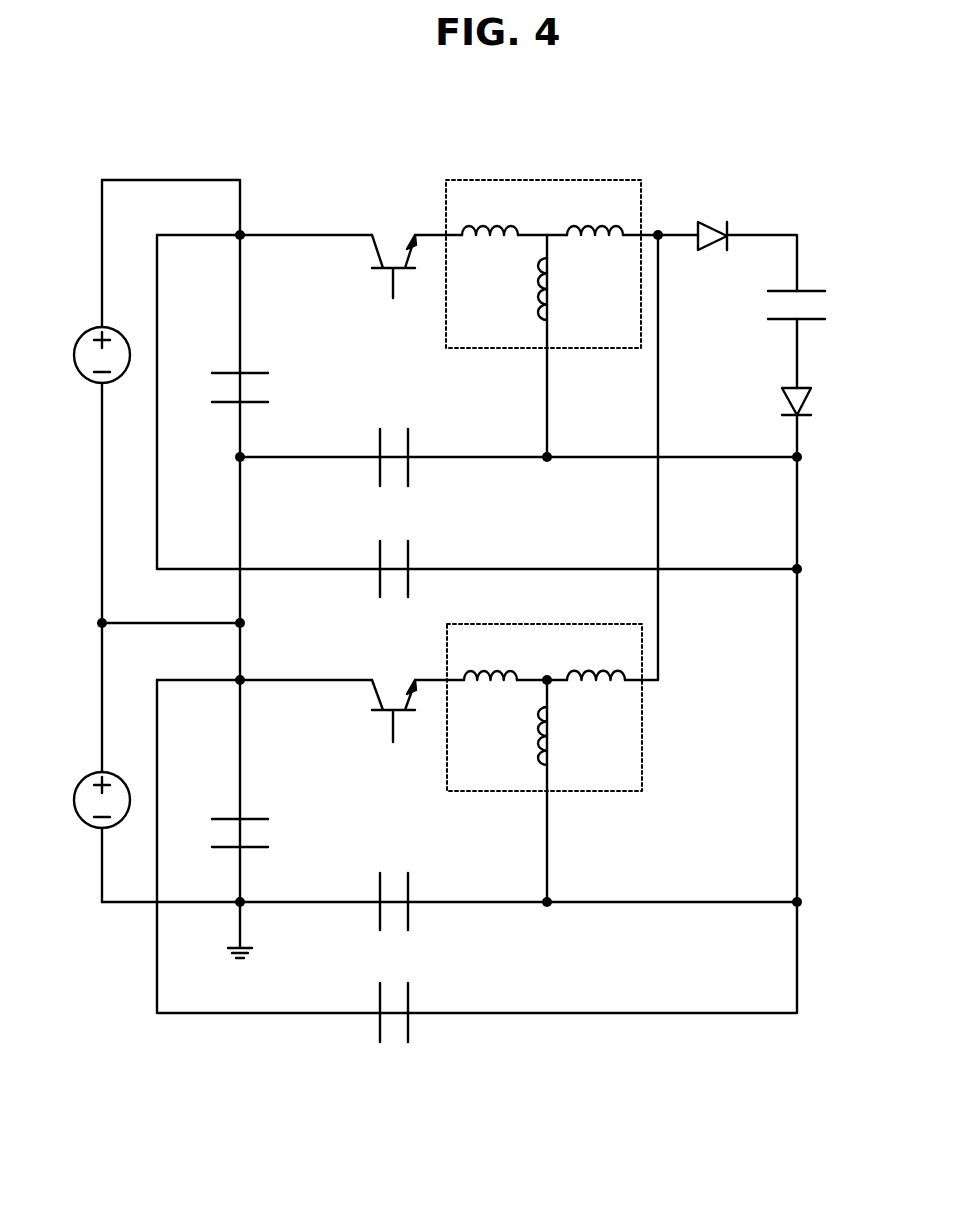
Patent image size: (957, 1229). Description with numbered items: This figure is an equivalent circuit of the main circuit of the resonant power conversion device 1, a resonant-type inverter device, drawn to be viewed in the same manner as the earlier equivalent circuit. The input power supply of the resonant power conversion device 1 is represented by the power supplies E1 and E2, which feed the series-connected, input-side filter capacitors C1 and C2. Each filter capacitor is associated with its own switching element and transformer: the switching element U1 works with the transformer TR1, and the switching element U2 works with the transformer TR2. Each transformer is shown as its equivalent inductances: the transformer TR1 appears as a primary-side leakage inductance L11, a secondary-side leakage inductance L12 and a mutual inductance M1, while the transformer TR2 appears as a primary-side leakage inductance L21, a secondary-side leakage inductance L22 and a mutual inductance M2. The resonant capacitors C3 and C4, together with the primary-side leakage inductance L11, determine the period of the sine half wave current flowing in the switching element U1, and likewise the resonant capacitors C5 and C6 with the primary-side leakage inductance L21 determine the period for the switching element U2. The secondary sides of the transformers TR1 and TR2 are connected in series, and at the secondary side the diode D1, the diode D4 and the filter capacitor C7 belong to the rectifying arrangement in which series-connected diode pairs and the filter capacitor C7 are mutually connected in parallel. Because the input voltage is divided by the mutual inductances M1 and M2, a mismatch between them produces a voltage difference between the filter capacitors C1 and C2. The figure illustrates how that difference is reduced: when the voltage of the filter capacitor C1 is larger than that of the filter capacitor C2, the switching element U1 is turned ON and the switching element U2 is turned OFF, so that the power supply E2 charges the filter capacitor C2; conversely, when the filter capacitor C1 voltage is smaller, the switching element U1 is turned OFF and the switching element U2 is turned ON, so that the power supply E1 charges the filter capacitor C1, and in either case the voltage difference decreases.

The resonant power conversion device 1 is at (530, 135).
The power supply E1 is at (88, 330).
The power supply E2 is at (84, 776).
The filter capacitor C1 is at (218, 370).
The filter capacitor C2 is at (218, 816).
The resonant capacitor C3 is at (378, 556).
The resonant capacitor C4 is at (378, 445).
The resonant capacitor C5 is at (378, 1000).
The resonant capacitor C6 is at (378, 890).
The filter capacitor C7 is at (818, 289).
The switching element U1 is at (381, 268).
The switching element U2 is at (381, 710).
The transformer TR1 is at (468, 178).
The transformer TR2 is at (580, 792).
The primary-side leakage inductance L11 is at (508, 232).
The secondary-side leakage inductance L12 is at (612, 232).
The primary-side leakage inductance L21 is at (508, 677).
The secondary-side leakage inductance L22 is at (612, 677).
The mutual inductance M1 is at (540, 290).
The mutual inductance M2 is at (540, 735).
The diode D1 is at (722, 225).
The diode D4 is at (812, 414).